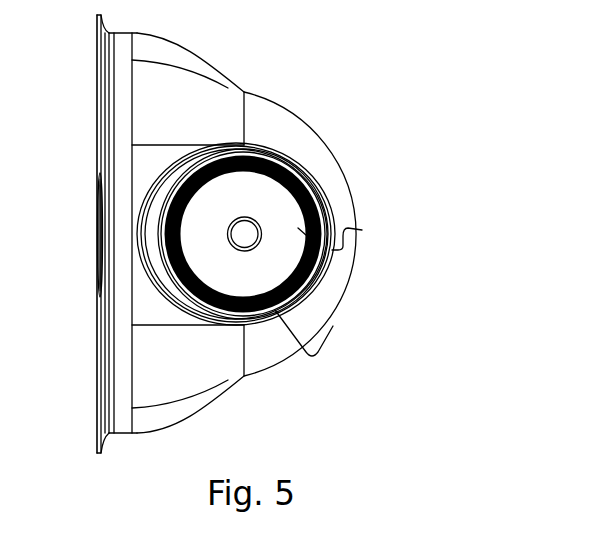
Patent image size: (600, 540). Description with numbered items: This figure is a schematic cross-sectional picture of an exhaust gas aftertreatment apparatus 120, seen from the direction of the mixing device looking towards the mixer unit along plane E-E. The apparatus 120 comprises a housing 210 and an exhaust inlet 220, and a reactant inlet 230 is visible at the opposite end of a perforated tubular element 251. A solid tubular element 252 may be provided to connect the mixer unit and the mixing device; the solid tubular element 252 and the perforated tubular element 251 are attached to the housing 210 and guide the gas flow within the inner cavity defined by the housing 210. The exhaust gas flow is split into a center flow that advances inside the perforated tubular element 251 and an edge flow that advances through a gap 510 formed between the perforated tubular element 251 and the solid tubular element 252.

The exhaust gas aftertreatment apparatus 120 is at (522, 66).
The housing 210 is at (308, 121).
The exhaust inlet 220 is at (97, 133).
The reactant inlet 230 is at (246, 217).
The perforated tubular element 251 is at (362, 230).
The solid tubular element 252 is at (332, 198).
The gap 510 is at (333, 326).